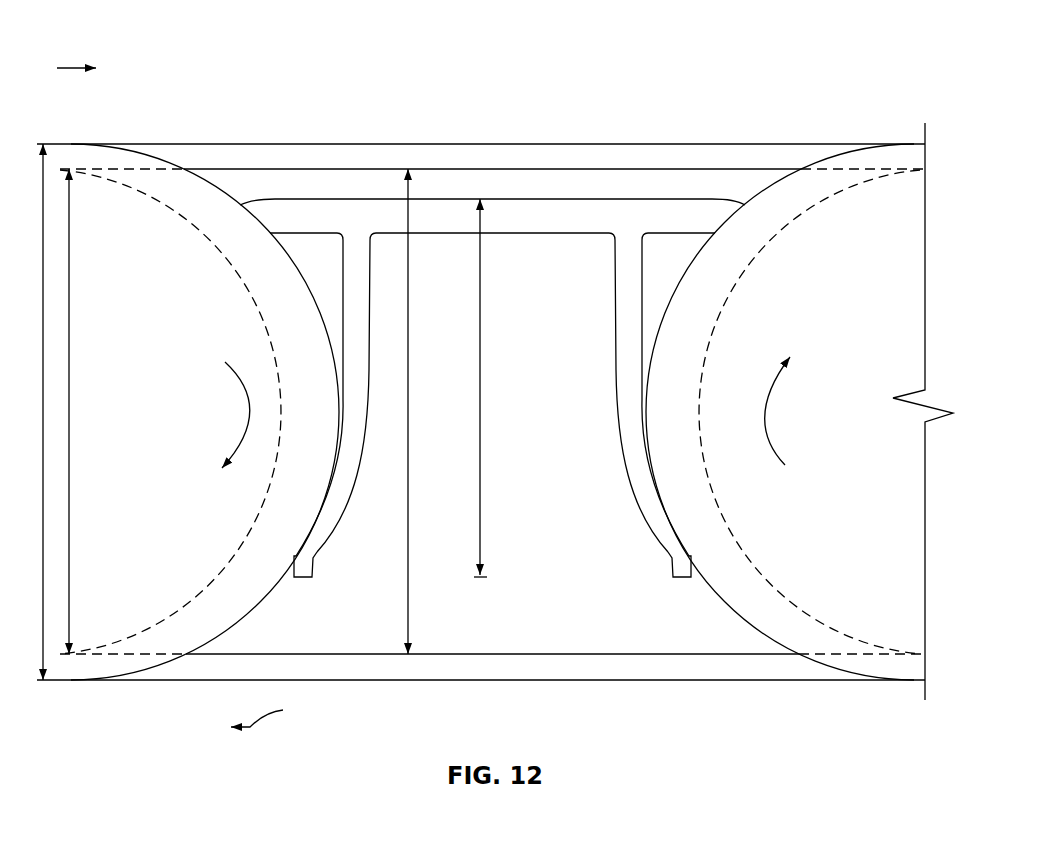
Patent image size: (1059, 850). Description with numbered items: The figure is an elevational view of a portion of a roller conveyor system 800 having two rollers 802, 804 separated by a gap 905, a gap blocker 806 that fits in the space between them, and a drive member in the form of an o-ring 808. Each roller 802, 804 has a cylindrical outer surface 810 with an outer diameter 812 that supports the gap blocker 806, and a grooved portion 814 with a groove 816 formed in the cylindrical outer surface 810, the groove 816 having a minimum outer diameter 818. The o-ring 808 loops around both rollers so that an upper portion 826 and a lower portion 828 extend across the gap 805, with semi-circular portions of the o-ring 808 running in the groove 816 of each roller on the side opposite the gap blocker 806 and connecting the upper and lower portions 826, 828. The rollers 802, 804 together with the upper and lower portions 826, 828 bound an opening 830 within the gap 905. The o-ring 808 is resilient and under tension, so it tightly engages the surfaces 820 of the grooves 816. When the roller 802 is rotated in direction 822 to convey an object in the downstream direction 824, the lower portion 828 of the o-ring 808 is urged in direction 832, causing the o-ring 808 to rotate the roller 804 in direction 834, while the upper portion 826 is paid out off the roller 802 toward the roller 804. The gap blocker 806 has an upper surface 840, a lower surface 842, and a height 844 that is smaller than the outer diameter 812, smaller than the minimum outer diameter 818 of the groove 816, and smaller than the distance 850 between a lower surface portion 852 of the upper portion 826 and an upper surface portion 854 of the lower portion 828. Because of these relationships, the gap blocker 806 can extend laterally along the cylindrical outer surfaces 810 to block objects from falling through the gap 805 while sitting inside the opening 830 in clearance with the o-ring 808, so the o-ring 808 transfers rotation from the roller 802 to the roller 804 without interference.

The system 800 is at (725, 86).
The roller 802 is at (86, 153).
The roller 804 is at (911, 153).
The gap 805 is at (475, 183).
The gap blocker 806 is at (597, 210).
The o-ring 808 is at (272, 150).
The cylindrical outer surface 810 is at (205, 175).
The outer diameter 812 is at (43, 313).
The grooved portion 814 is at (194, 158).
The groove 816 is at (176, 188).
The minimum outer diameter 818 is at (69, 385).
The surfaces 820 is at (184, 212).
The direction 822 is at (243, 462).
The downstream direction 824 is at (76, 67).
The upper portion 826 is at (780, 150).
The lower portion 828 is at (707, 670).
The opening 830 is at (657, 186).
The direction 832 is at (277, 710).
The direction 834 is at (762, 428).
The upper surface 840 is at (557, 195).
The lower surface 842 is at (297, 579).
The height 844 is at (481, 488).
The distance 850 is at (412, 440).
The lower surface portion 852 is at (350, 175).
The upper surface portion 854 is at (549, 655).
The gap 905 is at (485, 655).